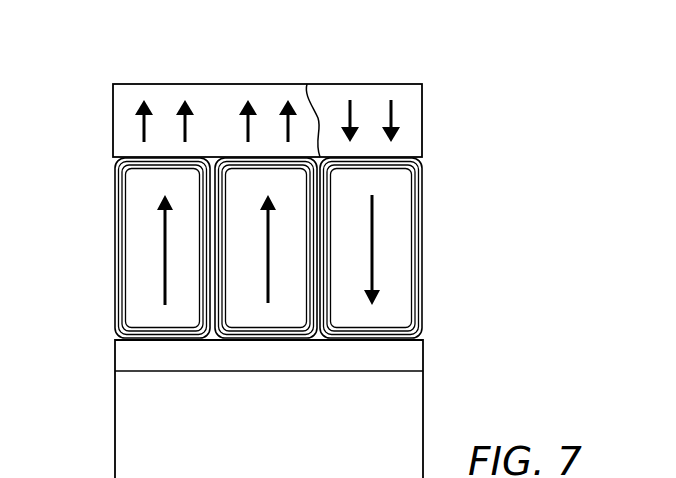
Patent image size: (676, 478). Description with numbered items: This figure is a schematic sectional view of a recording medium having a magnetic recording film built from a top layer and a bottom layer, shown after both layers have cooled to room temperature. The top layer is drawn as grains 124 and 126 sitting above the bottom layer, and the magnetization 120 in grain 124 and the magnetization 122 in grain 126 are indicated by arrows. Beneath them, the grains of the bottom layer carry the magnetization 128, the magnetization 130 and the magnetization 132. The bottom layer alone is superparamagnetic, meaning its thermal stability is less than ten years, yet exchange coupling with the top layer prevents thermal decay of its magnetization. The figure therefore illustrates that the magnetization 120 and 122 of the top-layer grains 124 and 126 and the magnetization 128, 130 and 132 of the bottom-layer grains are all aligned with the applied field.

The magnetization 120 is at (283, 127).
The magnetization 122 is at (353, 113).
The grain 124 is at (120, 130).
The grain 126 is at (412, 117).
The magnetization 128 is at (162, 257).
The magnetization 130 is at (268, 280).
The magnetization 132 is at (373, 248).